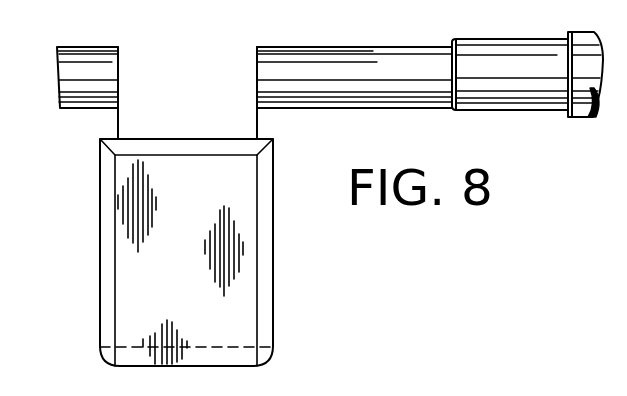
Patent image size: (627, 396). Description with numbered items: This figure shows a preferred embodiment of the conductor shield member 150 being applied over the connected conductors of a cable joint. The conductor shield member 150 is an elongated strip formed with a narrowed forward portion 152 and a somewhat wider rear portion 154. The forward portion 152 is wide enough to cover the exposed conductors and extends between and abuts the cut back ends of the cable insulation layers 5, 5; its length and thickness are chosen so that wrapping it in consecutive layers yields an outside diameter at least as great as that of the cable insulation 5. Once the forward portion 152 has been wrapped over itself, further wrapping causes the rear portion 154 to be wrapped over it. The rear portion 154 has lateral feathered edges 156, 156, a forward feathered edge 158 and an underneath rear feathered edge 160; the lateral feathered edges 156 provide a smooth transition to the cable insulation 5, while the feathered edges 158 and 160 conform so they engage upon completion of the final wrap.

The cable insulation 5 is at (85, 43).
The conductor shield member 150 is at (276, 222).
The forward portion 152 is at (243, 124).
The rear portion 154 is at (240, 325).
The lateral feathered edges 156 is at (113, 210).
The forward feathered edge 158 is at (140, 145).
The underneath rear feathered edge 160 is at (257, 365).